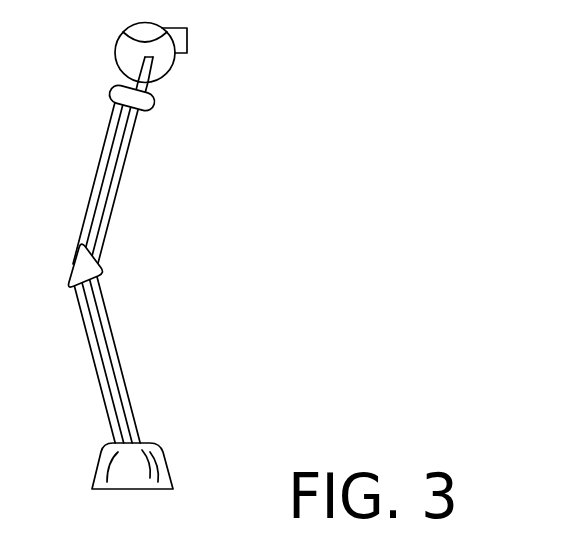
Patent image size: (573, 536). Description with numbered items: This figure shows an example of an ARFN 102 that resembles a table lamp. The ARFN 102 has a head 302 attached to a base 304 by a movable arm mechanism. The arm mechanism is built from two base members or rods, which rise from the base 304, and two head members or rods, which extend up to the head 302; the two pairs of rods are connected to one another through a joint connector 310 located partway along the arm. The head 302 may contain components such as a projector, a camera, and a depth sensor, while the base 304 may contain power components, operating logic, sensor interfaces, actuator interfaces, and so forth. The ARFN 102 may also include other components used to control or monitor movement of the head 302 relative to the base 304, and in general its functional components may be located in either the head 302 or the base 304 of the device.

The ARFN 102 is at (209, 260).
The head 302 is at (186, 70).
The base 304 is at (183, 472).
The joint connector 310 is at (88, 270).